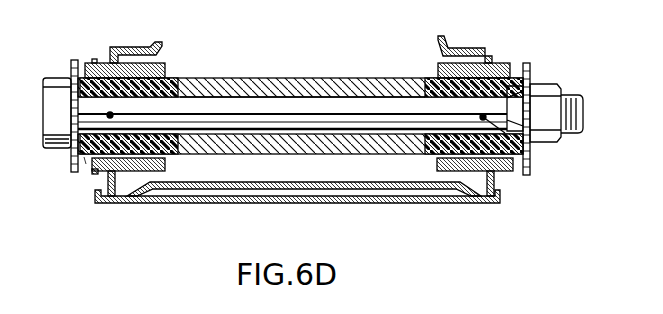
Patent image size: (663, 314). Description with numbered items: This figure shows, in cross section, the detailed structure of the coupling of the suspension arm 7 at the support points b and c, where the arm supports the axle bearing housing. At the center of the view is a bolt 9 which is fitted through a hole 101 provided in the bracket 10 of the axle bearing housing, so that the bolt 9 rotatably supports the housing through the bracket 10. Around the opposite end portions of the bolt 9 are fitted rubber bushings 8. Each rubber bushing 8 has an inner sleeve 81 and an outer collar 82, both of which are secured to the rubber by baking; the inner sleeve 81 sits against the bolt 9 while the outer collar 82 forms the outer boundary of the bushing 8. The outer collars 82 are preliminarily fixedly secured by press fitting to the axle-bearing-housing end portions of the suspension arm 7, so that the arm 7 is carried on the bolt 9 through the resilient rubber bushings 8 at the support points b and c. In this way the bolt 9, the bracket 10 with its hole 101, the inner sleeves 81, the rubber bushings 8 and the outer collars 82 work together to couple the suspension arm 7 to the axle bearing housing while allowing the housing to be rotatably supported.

The suspension arm 7 is at (460, 195).
The rubber bushing 8 is at (167, 77).
The bolt 9 is at (110, 115).
The bracket 10 is at (317, 88).
The hole 101 is at (251, 98).
The inner sleeve 81 is at (178, 90).
The outer collar 82 is at (95, 62).
The support point b is at (85, 158).
The support point c is at (477, 195).